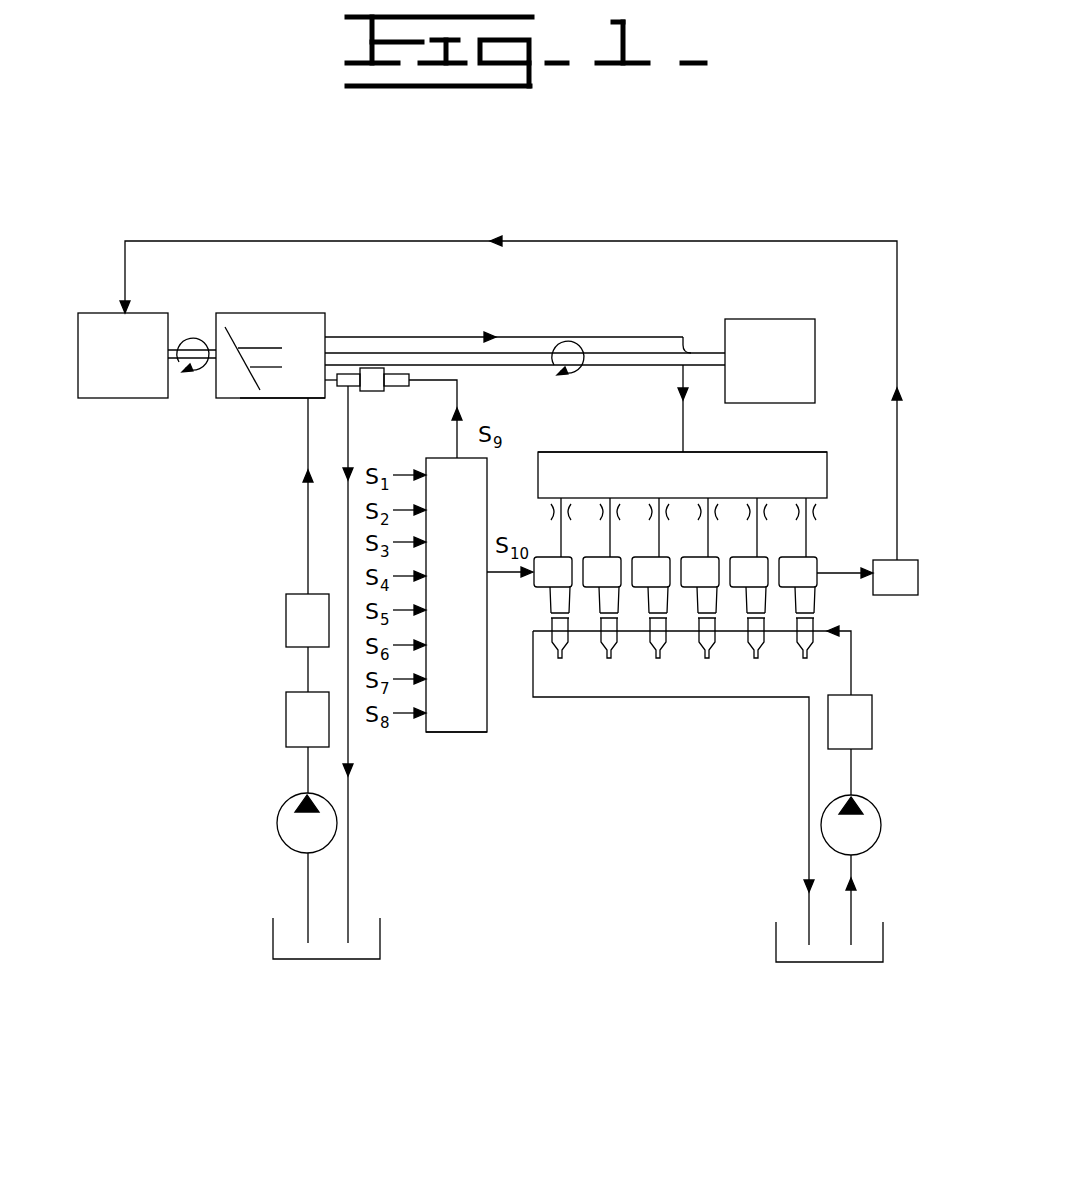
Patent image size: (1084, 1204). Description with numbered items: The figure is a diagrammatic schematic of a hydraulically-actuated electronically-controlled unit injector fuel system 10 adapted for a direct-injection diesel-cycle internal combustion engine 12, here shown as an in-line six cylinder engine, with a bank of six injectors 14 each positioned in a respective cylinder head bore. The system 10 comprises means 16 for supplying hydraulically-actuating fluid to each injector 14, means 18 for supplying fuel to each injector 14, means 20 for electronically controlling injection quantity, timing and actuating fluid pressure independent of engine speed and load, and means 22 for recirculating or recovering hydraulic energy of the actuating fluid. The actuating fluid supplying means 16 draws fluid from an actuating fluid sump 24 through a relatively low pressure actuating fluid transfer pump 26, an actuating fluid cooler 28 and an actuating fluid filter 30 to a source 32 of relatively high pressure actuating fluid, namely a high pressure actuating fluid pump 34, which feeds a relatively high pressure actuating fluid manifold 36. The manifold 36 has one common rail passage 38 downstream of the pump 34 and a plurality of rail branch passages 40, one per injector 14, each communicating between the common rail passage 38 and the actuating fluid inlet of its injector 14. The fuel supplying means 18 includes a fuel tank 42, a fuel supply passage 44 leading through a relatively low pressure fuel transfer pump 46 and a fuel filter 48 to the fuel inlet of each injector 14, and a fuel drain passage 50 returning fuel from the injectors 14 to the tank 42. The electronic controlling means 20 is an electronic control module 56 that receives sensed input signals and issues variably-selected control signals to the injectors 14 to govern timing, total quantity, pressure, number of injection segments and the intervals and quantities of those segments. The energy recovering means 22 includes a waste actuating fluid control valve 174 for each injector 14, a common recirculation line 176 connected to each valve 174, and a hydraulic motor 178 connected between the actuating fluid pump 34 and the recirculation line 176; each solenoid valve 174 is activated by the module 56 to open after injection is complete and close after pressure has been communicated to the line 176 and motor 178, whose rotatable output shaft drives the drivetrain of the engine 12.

The HEUI-II fuel system 10 is at (209, 197).
The internal combustion engine 12 is at (770, 361).
The injectors 14 is at (675, 607).
The means for supplying hydraulically-actuating fluid 16 is at (341, 996).
The means for supplying fuel 18 is at (828, 981).
The means for electronically controlling 20 is at (455, 746).
The means for recirculating or recovering hydraulic energy 22 is at (82, 262).
The actuating fluid sump 24 is at (382, 936).
The actuating fluid transfer pump 26 is at (278, 826).
The actuating fluid cooler 28 is at (288, 713).
The actuating fluid filter 30 is at (288, 632).
The source for generating relatively high pressure actuating fluid 32 is at (283, 291).
The high pressure actuating fluid pump 34 is at (276, 398).
The actuating fluid manifold 36 is at (737, 439).
The common rail passage 38 is at (565, 452).
The rail branch passages 40 is at (816, 528).
The fuel tank 42 is at (776, 946).
The fuel supply passage 44 is at (852, 668).
The fuel transfer pump 46 is at (874, 806).
The fuel filter 48 is at (862, 714).
The fuel drain passage 50 is at (809, 858).
The electronic control module 56 is at (456, 595).
The waste actuating fluid control valve 174 is at (867, 577).
The common recirculation line 176 is at (305, 241).
The hydraulic motor 178 is at (123, 355).